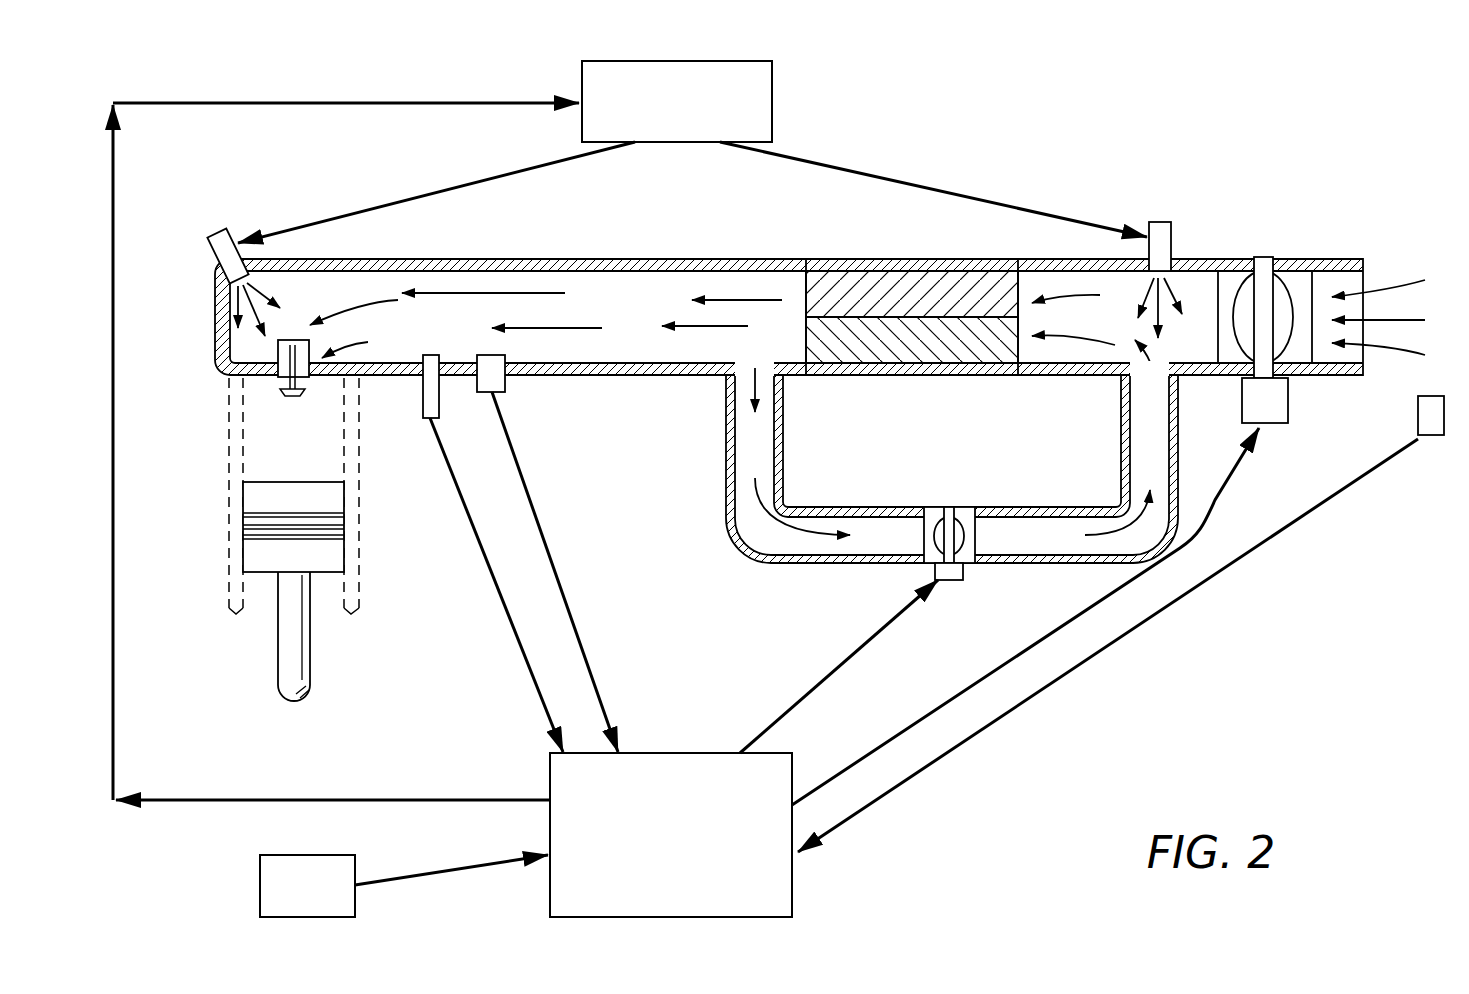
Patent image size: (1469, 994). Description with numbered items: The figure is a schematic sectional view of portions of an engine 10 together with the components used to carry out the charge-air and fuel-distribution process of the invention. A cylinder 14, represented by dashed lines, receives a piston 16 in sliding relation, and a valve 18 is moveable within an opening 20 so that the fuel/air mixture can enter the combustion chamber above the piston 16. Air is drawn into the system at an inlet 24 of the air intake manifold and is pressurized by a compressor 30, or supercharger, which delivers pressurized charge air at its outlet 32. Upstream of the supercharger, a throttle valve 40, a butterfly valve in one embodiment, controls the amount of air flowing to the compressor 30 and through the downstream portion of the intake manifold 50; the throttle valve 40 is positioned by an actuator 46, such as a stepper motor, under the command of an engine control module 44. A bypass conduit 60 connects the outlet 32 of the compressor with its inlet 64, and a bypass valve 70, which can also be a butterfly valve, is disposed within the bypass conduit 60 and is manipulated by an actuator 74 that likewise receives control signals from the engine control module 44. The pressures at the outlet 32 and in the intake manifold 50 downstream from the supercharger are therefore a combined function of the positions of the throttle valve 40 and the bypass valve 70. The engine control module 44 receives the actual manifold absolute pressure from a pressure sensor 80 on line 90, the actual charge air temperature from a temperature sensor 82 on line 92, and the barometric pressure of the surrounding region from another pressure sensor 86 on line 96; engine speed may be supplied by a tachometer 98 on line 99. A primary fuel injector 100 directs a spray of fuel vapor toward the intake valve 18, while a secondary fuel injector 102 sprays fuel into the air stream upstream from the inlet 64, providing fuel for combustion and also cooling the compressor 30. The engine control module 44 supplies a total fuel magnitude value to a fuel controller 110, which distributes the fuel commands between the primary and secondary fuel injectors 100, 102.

The engine 10 is at (1172, 140).
The cylinder 14 is at (240, 450).
The piston 16 is at (335, 557).
The valve 18 is at (298, 398).
The opening 20 is at (282, 376).
The inlet 24 is at (1362, 286).
The compressor 30 is at (872, 286).
The outlet 32 is at (804, 289).
The throttle valve 40 is at (1286, 290).
The engine control module 44 is at (797, 893).
The actuator 46 is at (1290, 402).
The intake manifold 50 is at (536, 292).
The bypass conduit 60 is at (830, 503).
The inlet 64 is at (1020, 288).
The bypass valve 70 is at (964, 514).
The actuator 74 is at (952, 584).
The pressure sensor 80 is at (506, 386).
The temperature sensor 82 is at (440, 405).
The pressure sensor 86 is at (1430, 437).
The line 90 is at (556, 563).
The line 92 is at (498, 596).
The line 96 is at (1045, 690).
The tachometer 98 is at (259, 892).
The line 99 is at (440, 872).
The primary fuel injector 100 is at (218, 232).
The secondary fuel injector 102 is at (1173, 236).
The fuel controller 110 is at (773, 97).